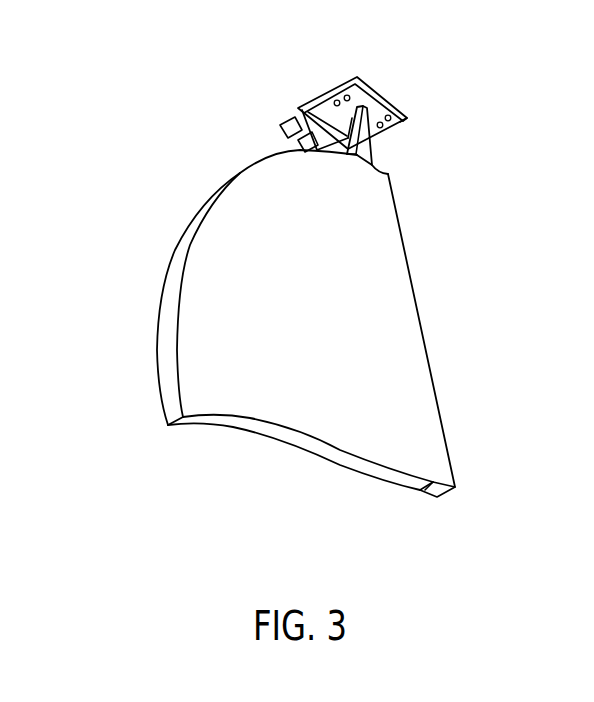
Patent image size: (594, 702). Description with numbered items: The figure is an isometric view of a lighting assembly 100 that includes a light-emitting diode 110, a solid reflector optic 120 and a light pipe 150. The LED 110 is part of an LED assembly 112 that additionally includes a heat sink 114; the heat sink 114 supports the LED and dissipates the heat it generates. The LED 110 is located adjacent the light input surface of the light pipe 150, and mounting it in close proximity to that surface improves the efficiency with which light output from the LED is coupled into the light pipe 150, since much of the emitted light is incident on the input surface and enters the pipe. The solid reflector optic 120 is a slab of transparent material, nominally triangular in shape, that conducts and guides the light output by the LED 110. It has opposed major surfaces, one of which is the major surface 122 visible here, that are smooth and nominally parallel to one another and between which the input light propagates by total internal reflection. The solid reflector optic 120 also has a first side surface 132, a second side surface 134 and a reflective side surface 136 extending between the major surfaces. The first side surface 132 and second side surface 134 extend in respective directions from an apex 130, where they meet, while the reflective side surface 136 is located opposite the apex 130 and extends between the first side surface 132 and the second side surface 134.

The lighting assembly 100 is at (228, 108).
The light-emitting diode 110 is at (378, 106).
The LED assembly 112 is at (410, 117).
The heat sink 114 is at (357, 93).
The light pipe 150 is at (372, 133).
The solid reflector optic 120 is at (467, 467).
The major surface 122 is at (357, 352).
The apex 130 is at (388, 173).
The first side surface 132 is at (415, 293).
The second side surface 134 is at (165, 353).
The reflective side surface 136 is at (297, 440).